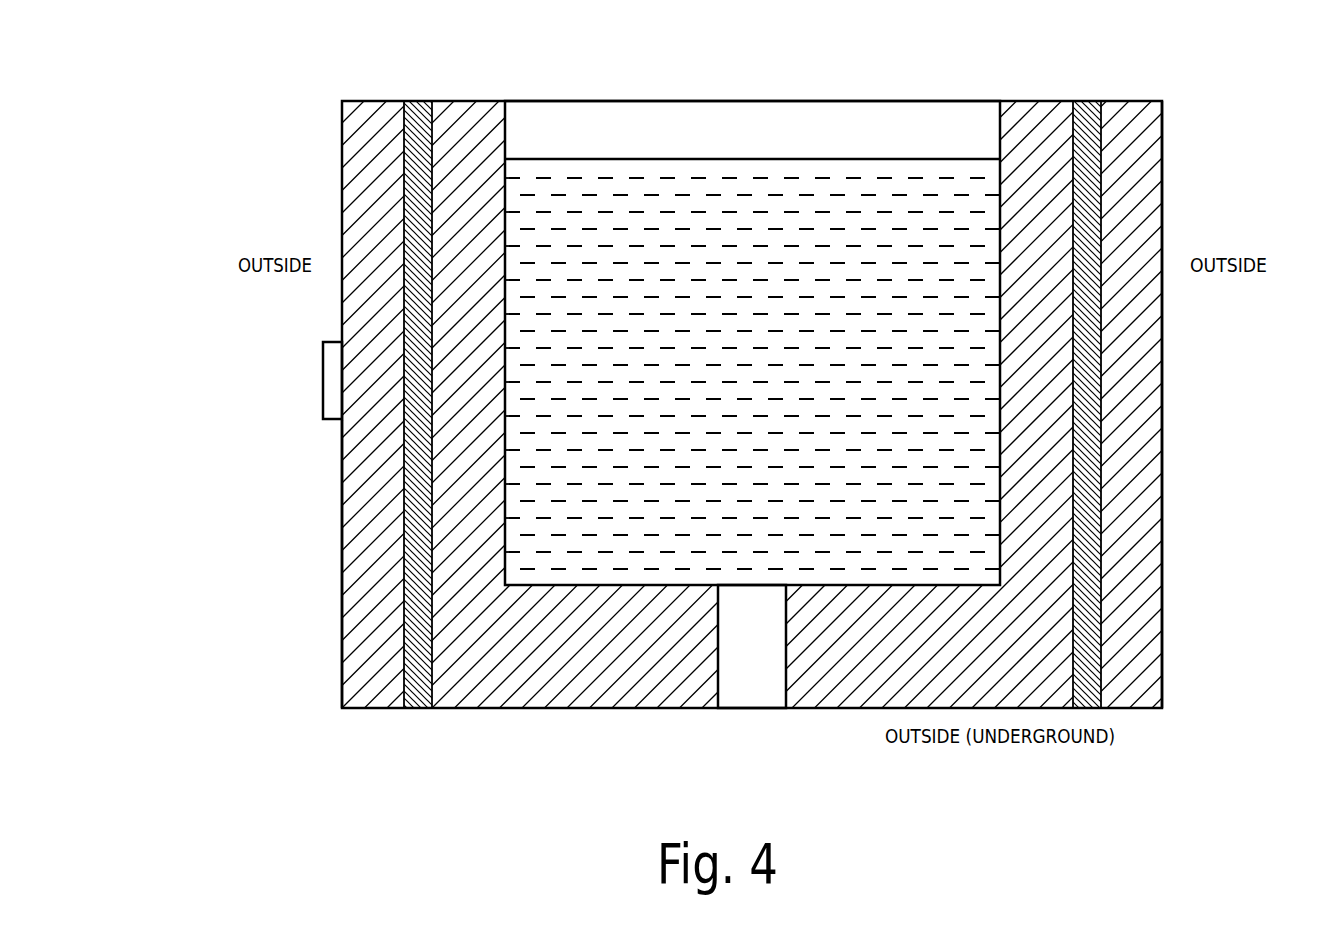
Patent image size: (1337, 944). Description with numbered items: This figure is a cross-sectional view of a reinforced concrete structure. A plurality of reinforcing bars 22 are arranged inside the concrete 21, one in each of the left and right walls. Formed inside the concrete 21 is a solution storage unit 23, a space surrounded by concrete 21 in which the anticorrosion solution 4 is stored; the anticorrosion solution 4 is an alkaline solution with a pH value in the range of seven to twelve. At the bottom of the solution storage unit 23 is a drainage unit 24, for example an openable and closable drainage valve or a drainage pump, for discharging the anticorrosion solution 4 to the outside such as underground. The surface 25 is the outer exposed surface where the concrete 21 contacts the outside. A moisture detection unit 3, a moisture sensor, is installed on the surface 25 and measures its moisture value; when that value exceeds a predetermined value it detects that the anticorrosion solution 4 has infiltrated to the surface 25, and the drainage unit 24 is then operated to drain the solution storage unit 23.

The moisture detection unit 3 is at (323, 374).
The anticorrosion solution 4 is at (761, 160).
The concrete 21 is at (1032, 105).
The reinforcing bar 22 is at (465, 72).
The solution storage unit 23 is at (655, 118).
The drainage unit 24 is at (752, 687).
The surface 25 is at (342, 512).